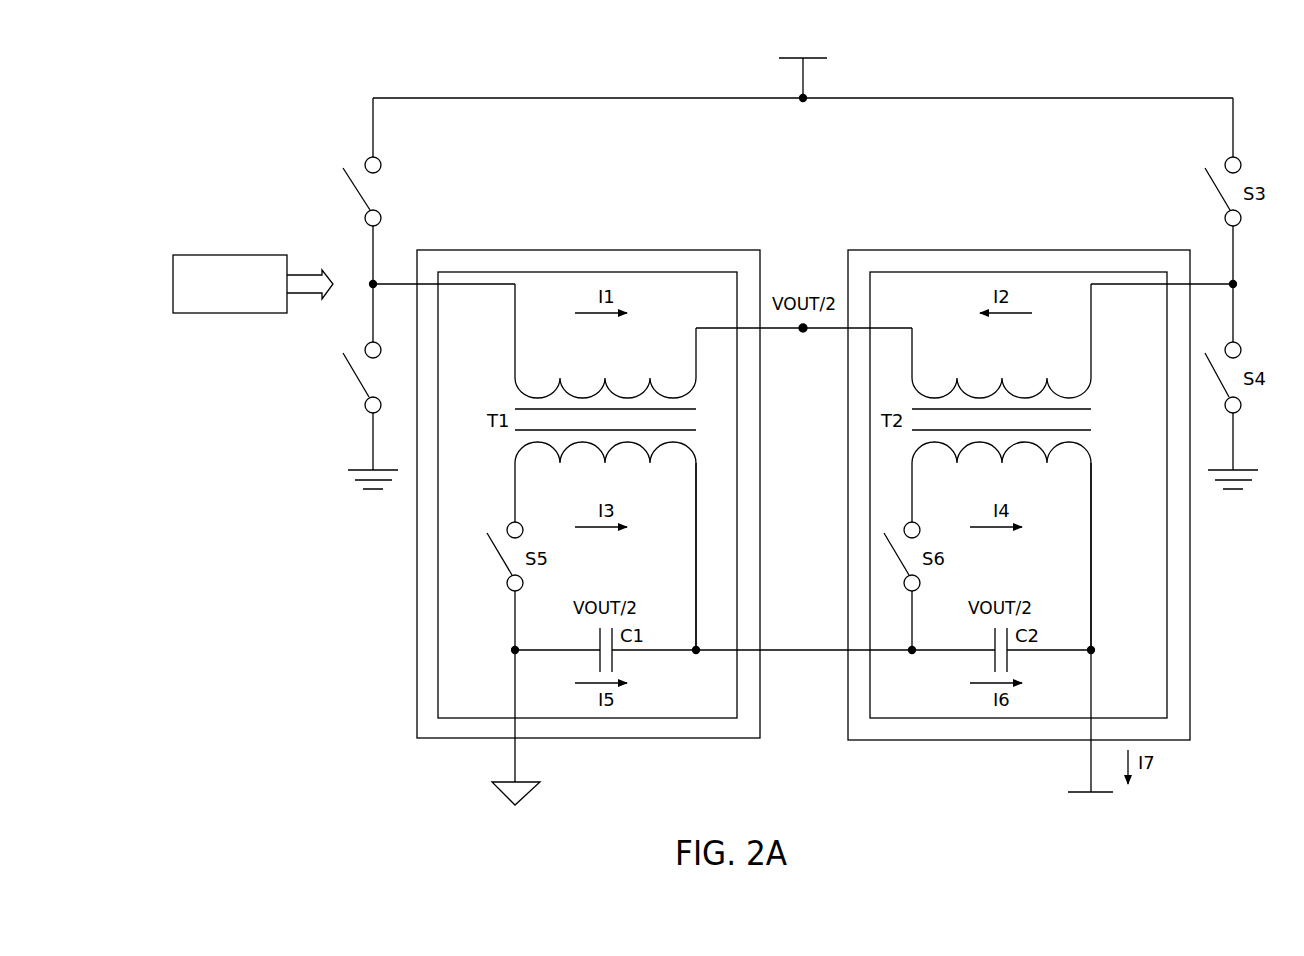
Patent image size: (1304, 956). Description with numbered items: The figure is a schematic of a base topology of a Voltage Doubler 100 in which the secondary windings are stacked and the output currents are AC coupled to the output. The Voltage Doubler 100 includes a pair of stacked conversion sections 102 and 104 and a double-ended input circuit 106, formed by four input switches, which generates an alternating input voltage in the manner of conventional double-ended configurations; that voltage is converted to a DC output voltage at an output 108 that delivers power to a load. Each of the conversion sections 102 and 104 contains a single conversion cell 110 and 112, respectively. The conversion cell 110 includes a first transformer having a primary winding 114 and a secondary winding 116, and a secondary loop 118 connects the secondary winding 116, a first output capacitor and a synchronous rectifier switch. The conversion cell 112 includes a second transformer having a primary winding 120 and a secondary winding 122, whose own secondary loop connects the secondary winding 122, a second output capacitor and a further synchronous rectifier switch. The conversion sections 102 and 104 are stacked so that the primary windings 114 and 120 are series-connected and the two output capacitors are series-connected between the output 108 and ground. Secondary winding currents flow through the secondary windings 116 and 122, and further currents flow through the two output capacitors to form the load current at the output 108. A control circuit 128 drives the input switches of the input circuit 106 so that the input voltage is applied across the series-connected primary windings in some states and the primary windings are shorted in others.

The Voltage Doubler 100 is at (1178, 62).
The conversion section 102 is at (590, 250).
The conversion section 104 is at (1018, 250).
The double-ended input circuit 106 is at (303, 181).
The output 108 is at (1092, 546).
The conversion cell 110 is at (740, 484).
The conversion cell 112 is at (870, 563).
The primary winding 114 is at (515, 328).
The secondary winding 116 is at (515, 492).
The secondary loop 118 is at (695, 560).
The primary winding 120 is at (1092, 330).
The secondary winding 122 is at (912, 492).
The control circuit 128 is at (229, 255).